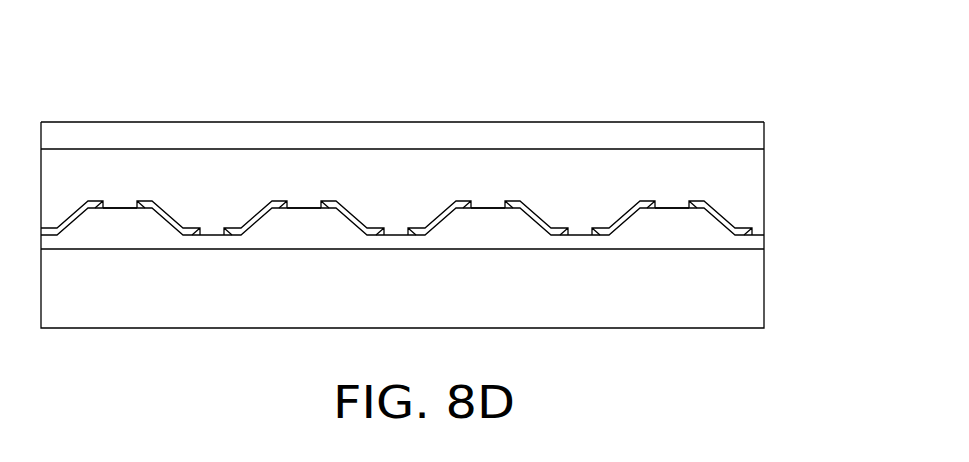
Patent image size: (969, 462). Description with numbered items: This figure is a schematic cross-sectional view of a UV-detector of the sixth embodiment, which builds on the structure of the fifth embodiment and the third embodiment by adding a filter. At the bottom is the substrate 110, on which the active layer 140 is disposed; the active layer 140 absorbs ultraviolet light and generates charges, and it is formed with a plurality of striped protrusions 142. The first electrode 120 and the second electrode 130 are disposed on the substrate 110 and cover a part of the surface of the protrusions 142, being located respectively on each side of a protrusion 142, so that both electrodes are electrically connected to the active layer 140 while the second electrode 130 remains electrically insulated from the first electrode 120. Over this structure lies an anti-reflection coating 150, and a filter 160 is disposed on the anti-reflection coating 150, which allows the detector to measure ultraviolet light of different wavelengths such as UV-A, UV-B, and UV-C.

The substrate 110 is at (718, 293).
The first electrode 120 is at (698, 202).
The second electrode 130 is at (620, 210).
The active layer 140 is at (748, 242).
The striped protrusions 142 is at (482, 227).
The anti-reflection coating 150 is at (732, 191).
The filter 160 is at (748, 138).